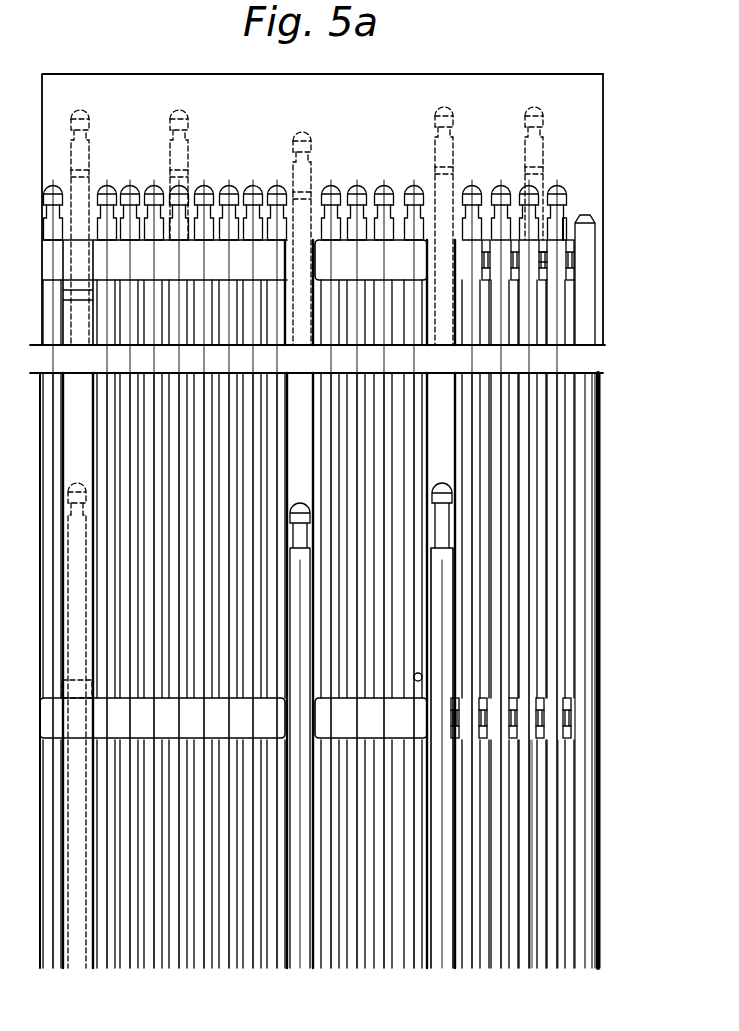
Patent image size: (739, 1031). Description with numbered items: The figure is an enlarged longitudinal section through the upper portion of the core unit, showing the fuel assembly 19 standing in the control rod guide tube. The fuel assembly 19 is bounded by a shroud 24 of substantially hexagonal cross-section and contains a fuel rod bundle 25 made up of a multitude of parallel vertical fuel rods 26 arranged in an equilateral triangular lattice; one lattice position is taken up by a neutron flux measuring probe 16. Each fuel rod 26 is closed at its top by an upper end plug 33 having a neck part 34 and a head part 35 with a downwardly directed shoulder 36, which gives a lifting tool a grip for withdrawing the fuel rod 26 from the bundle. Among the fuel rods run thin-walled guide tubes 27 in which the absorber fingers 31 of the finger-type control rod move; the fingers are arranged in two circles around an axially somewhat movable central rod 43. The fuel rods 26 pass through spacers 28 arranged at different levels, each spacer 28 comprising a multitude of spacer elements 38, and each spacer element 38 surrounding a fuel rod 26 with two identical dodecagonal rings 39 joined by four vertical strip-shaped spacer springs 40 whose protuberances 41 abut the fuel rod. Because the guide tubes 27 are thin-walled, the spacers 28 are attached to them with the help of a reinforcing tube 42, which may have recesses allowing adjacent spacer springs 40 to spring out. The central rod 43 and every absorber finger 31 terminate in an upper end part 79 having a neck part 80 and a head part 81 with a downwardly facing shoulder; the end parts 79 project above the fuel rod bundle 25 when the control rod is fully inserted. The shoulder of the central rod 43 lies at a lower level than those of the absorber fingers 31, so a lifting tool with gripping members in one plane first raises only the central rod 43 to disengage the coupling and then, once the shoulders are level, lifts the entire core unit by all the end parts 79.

The neutron flux measuring probe 16 is at (592, 393).
The fuel assembly 19 is at (638, 762).
The shroud 24 is at (599, 790).
The fuel rod bundle 25 is at (530, 848).
The fuel rods 26 is at (532, 917).
The guide tubes 27 is at (457, 413).
The spacers 28 is at (398, 240).
The absorber fingers 31 is at (445, 593).
The upper end plug 33 is at (500, 187).
The neck part 34 is at (568, 222).
The head part 35 is at (557, 185).
The shoulder 36 is at (566, 216).
The spacer elements 38 is at (545, 727).
The dodecagonal rings 39 is at (574, 240).
The spacer springs 40 is at (545, 252).
The protuberances 41 is at (545, 262).
The reinforcing tube 42 is at (422, 676).
The central rod 43 is at (297, 957).
The upper end part 79 is at (172, 154).
The neck part 80 is at (190, 149).
The head part 81 is at (184, 124).